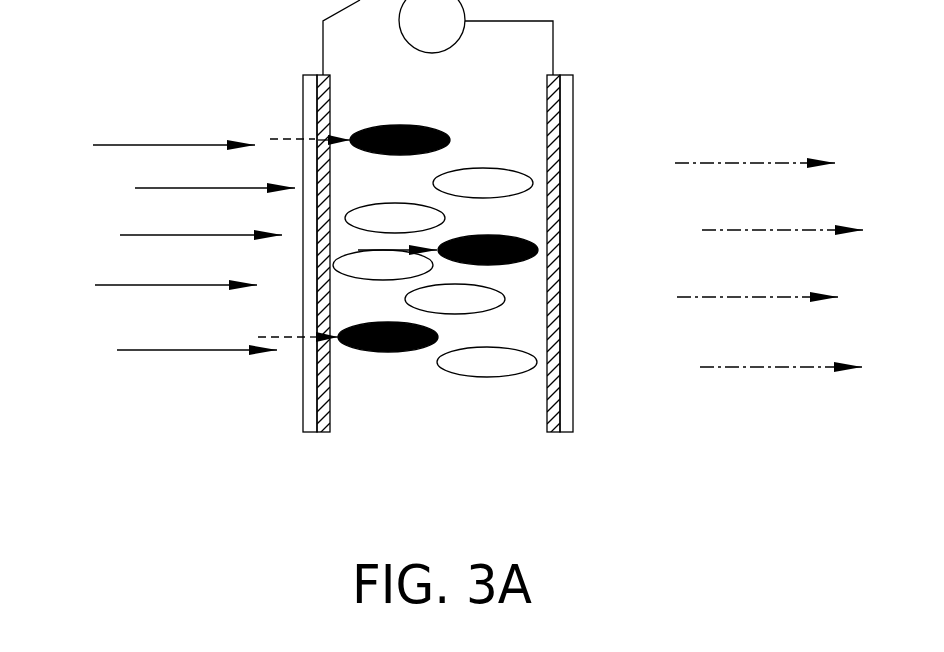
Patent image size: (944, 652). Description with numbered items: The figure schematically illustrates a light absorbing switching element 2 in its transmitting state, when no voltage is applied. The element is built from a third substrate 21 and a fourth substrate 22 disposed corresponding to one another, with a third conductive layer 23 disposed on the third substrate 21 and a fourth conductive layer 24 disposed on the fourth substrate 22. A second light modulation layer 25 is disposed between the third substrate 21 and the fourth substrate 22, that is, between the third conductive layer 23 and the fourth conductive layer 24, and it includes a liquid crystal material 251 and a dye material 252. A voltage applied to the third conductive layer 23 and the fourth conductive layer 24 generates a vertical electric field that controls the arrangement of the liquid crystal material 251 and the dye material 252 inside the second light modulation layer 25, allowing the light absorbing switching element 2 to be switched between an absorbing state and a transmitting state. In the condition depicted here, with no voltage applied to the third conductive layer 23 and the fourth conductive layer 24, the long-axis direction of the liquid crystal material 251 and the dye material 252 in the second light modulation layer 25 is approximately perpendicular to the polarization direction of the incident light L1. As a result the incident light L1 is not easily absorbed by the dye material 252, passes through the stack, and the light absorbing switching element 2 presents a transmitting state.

The light absorbing switching element 2 is at (31, 41).
The incident light L1 is at (152, 145).
The third substrate 21 is at (311, 432).
The fourth substrate 22 is at (565, 432).
The third conductive layer 23 is at (322, 432).
The fourth conductive layer 24 is at (555, 432).
The second light modulation layer 25 is at (333, 436).
The liquid crystal material 251 is at (492, 172).
The dye material 252 is at (400, 126).